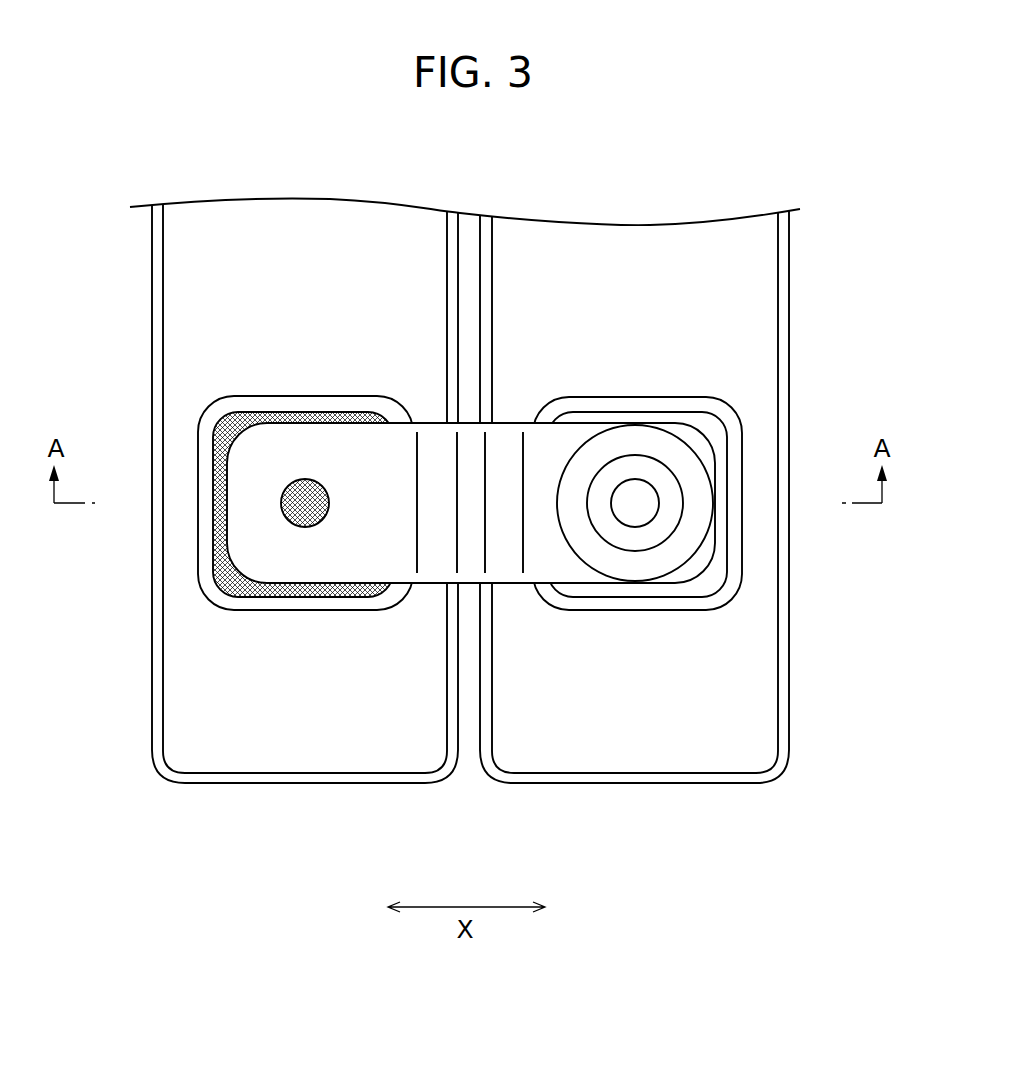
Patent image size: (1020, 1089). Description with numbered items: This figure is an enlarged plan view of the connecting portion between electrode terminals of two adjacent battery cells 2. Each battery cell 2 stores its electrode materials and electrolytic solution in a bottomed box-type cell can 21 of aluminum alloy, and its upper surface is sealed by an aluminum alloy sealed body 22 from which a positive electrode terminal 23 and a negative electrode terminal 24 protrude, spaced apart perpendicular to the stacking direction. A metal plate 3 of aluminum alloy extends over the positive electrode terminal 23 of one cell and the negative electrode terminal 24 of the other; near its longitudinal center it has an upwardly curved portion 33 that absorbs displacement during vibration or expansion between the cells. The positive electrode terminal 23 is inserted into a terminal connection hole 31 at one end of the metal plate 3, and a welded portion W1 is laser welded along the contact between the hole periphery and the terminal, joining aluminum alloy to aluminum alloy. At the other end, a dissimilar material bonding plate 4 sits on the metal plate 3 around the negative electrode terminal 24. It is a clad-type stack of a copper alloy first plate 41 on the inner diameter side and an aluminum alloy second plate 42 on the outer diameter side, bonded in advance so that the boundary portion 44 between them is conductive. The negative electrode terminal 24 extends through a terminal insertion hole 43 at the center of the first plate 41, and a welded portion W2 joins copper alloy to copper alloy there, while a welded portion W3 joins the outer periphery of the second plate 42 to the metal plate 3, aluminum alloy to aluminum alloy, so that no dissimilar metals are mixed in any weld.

The battery cell 2 is at (473, 548).
The cell can 21 is at (190, 787).
The sealed body 22 is at (198, 665).
The positive electrode terminal 23 is at (300, 490).
The negative electrode terminal 24 is at (647, 497).
The metal plate 3 is at (471, 470).
The terminal connection hole 31 is at (346, 439).
The curved portion 33 is at (463, 557).
The dissimilar material bonding plate 4 is at (699, 494).
The first plate 41 is at (714, 435).
The second plate 42 is at (642, 450).
The terminal insertion hole 43 is at (641, 574).
The boundary portion 44 is at (684, 490).
The welded portion W1 is at (327, 518).
The welded portion W2 is at (657, 527).
The welded portion W3 is at (570, 467).